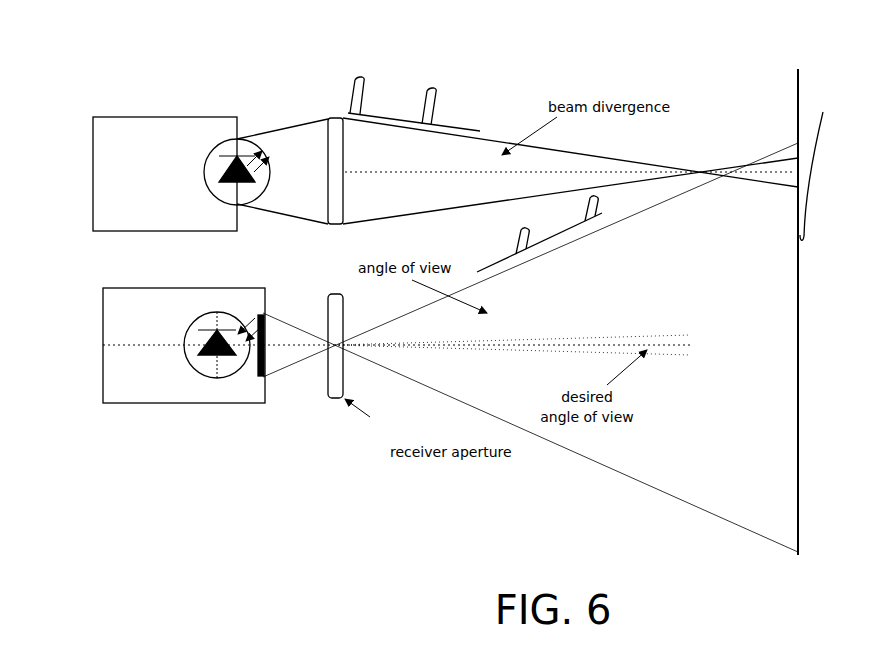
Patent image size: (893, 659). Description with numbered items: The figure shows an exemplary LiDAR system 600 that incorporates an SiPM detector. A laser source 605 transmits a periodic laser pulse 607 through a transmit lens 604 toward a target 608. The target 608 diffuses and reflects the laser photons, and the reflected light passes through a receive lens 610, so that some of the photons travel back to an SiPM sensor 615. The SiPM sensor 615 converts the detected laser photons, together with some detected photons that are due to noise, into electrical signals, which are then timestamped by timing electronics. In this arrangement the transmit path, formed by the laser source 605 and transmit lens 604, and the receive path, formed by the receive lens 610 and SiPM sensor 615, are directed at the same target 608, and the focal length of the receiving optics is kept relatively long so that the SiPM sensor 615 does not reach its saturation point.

The LiDAR system 600 is at (598, 72).
The transmit lens 604 is at (328, 131).
The laser source 605 is at (93, 148).
The periodic laser pulse 607 is at (437, 112).
The target 608 is at (825, 312).
The receive lens 610 is at (328, 369).
The SiPM sensor 615 is at (135, 398).